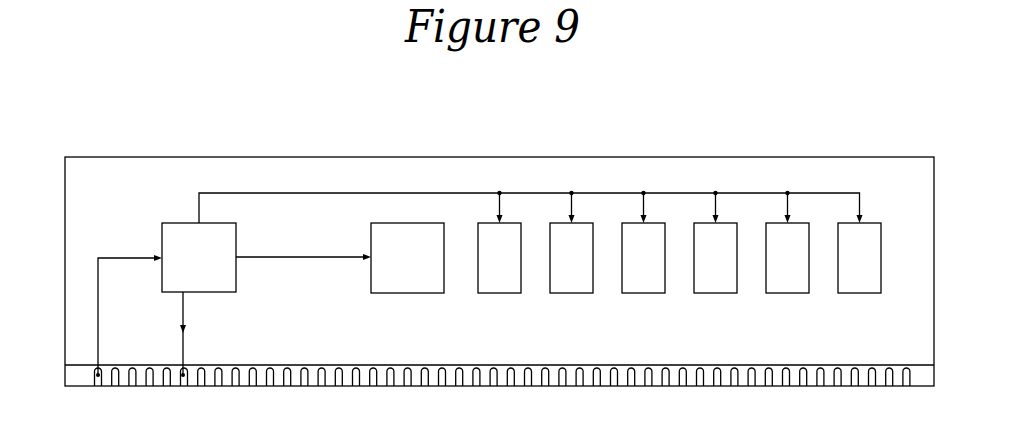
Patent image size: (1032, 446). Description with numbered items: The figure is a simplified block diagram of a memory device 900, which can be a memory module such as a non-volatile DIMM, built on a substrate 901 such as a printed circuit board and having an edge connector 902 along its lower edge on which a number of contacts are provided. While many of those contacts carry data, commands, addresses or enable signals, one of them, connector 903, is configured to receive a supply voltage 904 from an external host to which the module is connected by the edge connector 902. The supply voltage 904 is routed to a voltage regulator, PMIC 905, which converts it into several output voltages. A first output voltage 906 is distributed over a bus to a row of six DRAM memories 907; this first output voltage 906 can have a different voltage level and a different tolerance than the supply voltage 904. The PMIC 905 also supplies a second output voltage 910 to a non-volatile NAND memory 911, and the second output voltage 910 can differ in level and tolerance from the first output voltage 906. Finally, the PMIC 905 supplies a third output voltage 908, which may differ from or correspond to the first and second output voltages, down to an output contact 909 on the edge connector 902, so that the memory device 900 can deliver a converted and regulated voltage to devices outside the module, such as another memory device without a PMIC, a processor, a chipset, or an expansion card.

The memory device 900 is at (131, 100).
The substrate 901 is at (82, 208).
The edge connector 902 is at (82, 380).
The connector 903 is at (97, 386).
The supply voltage 904 is at (97, 268).
The PMIC 905 is at (162, 223).
The first output voltage 906 is at (337, 192).
The DRAM memories 907 is at (500, 293).
The third output voltage 908 is at (185, 305).
The output contact 909 is at (183, 386).
The second output voltage 910 is at (320, 257).
The NAND memory 911 is at (422, 293).